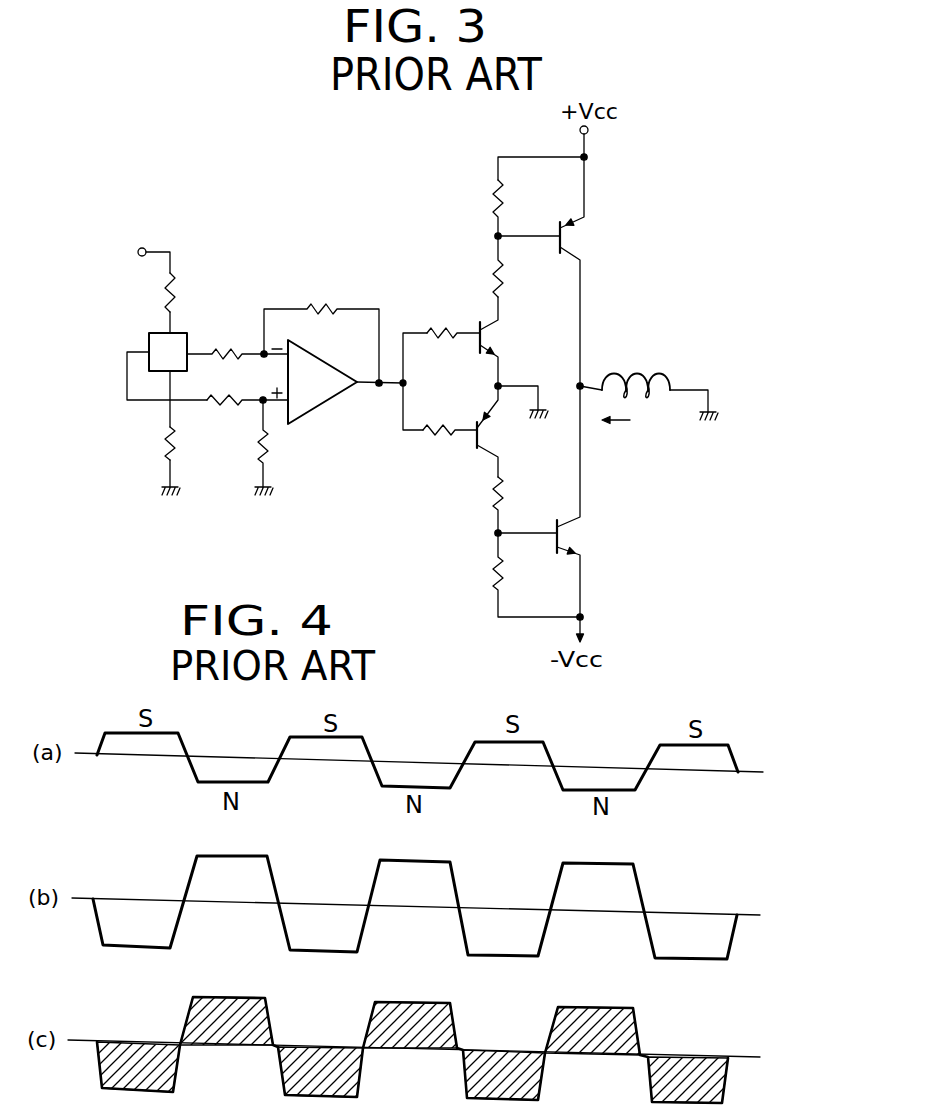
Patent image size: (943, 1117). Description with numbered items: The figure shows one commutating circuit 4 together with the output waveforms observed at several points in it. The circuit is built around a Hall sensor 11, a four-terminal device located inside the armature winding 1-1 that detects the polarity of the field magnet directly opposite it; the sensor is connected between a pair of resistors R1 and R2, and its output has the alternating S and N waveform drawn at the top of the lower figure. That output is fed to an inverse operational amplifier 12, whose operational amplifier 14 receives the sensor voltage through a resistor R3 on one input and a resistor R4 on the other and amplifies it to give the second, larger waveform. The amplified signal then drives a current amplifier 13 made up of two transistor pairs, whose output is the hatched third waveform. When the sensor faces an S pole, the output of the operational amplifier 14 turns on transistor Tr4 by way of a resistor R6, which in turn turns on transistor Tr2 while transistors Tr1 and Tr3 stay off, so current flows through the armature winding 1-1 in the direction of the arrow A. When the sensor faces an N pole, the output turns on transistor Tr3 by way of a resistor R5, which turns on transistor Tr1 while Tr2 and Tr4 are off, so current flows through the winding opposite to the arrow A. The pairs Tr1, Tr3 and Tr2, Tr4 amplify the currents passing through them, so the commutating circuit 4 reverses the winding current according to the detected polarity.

The commutating circuit 4 is at (392, 266).
The Hall sensor 11 is at (149, 337).
The inverse operational amplifier 12 is at (295, 425).
The current amplifier 13 is at (483, 457).
The operational amplifier 14 is at (331, 375).
The armature winding 1-1 is at (662, 374).
The resistor R1 is at (187, 292).
The resistor R2 is at (185, 443).
The resistor R3 is at (225, 340).
The resistor R4 is at (235, 415).
The resistor R5 is at (450, 320).
The resistor R6 is at (450, 446).
The transistor Tr1 is at (593, 271).
The transistor Tr2 is at (589, 501).
The transistor Tr3 is at (510, 341).
The transistor Tr4 is at (505, 431).
The arrow A is at (626, 424).